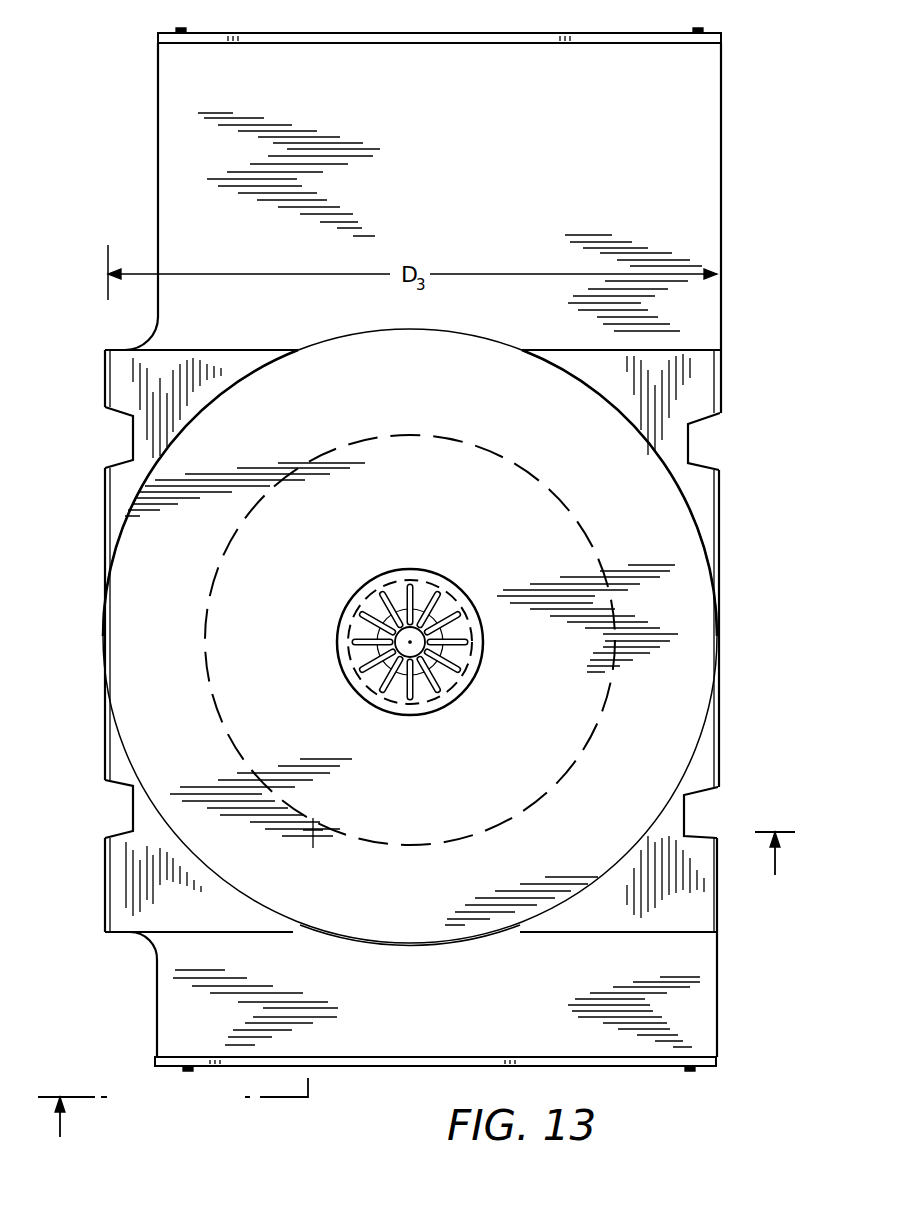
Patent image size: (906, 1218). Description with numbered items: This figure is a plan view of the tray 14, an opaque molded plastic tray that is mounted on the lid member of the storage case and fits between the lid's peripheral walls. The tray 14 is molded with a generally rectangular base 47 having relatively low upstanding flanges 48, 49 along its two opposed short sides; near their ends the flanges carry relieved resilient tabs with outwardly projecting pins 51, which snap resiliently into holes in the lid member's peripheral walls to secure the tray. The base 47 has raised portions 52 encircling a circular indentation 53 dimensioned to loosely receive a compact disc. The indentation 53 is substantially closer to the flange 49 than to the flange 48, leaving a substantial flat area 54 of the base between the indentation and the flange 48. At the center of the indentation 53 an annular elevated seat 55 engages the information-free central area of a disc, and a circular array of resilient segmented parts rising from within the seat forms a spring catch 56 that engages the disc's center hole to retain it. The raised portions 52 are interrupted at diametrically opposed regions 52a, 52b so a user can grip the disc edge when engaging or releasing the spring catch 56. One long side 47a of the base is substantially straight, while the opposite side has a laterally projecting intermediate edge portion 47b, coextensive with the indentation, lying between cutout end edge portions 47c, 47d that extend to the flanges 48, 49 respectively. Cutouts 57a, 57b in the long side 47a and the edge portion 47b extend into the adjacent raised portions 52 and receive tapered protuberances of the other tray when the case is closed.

The tray 14 is at (763, 232).
The base 47 is at (570, 104).
The long side 47a is at (787, 337).
The intermediate edge portion 47b is at (106, 522).
The cutout end edge portion 47c is at (157, 204).
The cutout end edge portion 47d is at (157, 1003).
The flange 48 is at (484, 33).
The flange 49 is at (400, 1066).
The pins 51 is at (185, 30).
The raised portions 52 is at (134, 375).
The interruption of raised portions 52a is at (448, 359).
The interruption of raised portions 52b is at (400, 944).
The circular indentation 53 is at (705, 628).
The flat area 54 is at (443, 215).
The annular elevated seat 55 is at (480, 645).
The spring catch 56 is at (424, 602).
The cutout 57a is at (766, 458).
The cutout 57b is at (133, 447).